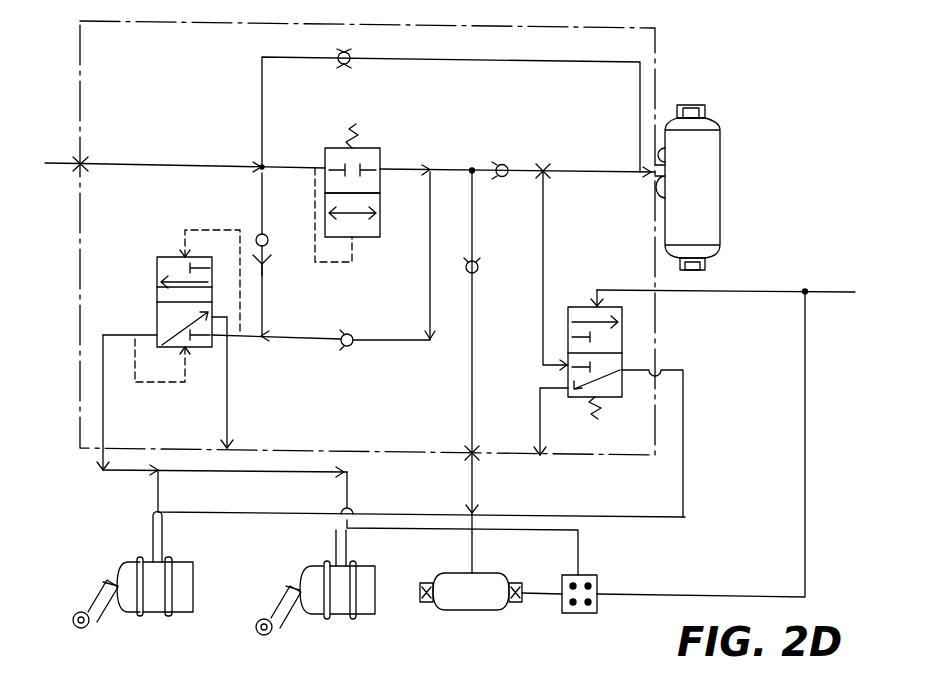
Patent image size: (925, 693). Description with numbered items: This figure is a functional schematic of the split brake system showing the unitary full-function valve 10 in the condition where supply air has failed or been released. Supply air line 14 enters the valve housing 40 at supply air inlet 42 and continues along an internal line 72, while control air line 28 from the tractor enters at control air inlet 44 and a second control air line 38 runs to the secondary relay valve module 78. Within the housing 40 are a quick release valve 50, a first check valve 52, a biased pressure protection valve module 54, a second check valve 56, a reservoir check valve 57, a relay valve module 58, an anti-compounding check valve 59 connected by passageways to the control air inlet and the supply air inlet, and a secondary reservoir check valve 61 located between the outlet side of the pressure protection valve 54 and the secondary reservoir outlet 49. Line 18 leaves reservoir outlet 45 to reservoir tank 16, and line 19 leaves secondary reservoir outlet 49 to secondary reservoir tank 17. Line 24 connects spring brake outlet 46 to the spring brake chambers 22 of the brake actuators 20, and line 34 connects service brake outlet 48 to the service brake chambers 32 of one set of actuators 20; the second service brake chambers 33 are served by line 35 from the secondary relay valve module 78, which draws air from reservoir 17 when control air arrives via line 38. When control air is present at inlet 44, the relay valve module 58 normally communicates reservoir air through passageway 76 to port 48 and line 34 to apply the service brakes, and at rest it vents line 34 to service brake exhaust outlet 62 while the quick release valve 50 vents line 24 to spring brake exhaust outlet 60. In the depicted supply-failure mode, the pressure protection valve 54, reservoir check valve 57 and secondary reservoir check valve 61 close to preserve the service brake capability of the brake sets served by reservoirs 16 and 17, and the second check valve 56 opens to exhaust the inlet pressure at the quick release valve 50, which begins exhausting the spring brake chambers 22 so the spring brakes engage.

The full-function valve 10 is at (694, 77).
The supply air line 14 is at (70, 162).
The reservoir tank 16 is at (708, 193).
The secondary reservoir tank 17 is at (462, 612).
The line 18 is at (673, 198).
The line 19 is at (476, 487).
The brake actuator 20 is at (128, 560).
The spring brake chamber 22 is at (196, 588).
The line 24 is at (128, 476).
The control air line 28 is at (758, 296).
The service brake chamber 32 is at (156, 600).
The second service brake chamber 33 is at (346, 616).
The line 34 is at (246, 514).
The service brake chamber line 35 is at (394, 530).
The control air line 38 is at (804, 522).
The housing 40 is at (79, 307).
The supply air inlet 42 is at (85, 161).
The control air inlet 44 is at (662, 292).
The reservoir outlet 45 is at (658, 150).
The spring brake outlet 46 is at (97, 453).
The service brake outlet 48 is at (686, 370).
The secondary reservoir outlet 49 is at (470, 462).
The quick release valve 50 is at (157, 272).
The first check valve 52 is at (352, 352).
The biased pressure protection valve module 54 is at (382, 150).
The second check valve 56 is at (257, 232).
The reservoir check valve 57 is at (503, 163).
The relay valve module 58 is at (572, 307).
The anti-compounding check valve 59 is at (340, 64).
The spring brake exhaust outlet 60 is at (229, 452).
The secondary reservoir check valve 61 is at (478, 262).
The service brake exhaust outlet 62 is at (542, 460).
The line 72 is at (196, 164).
The passageway 76 is at (542, 296).
The secondary relay valve module 78 is at (569, 618).